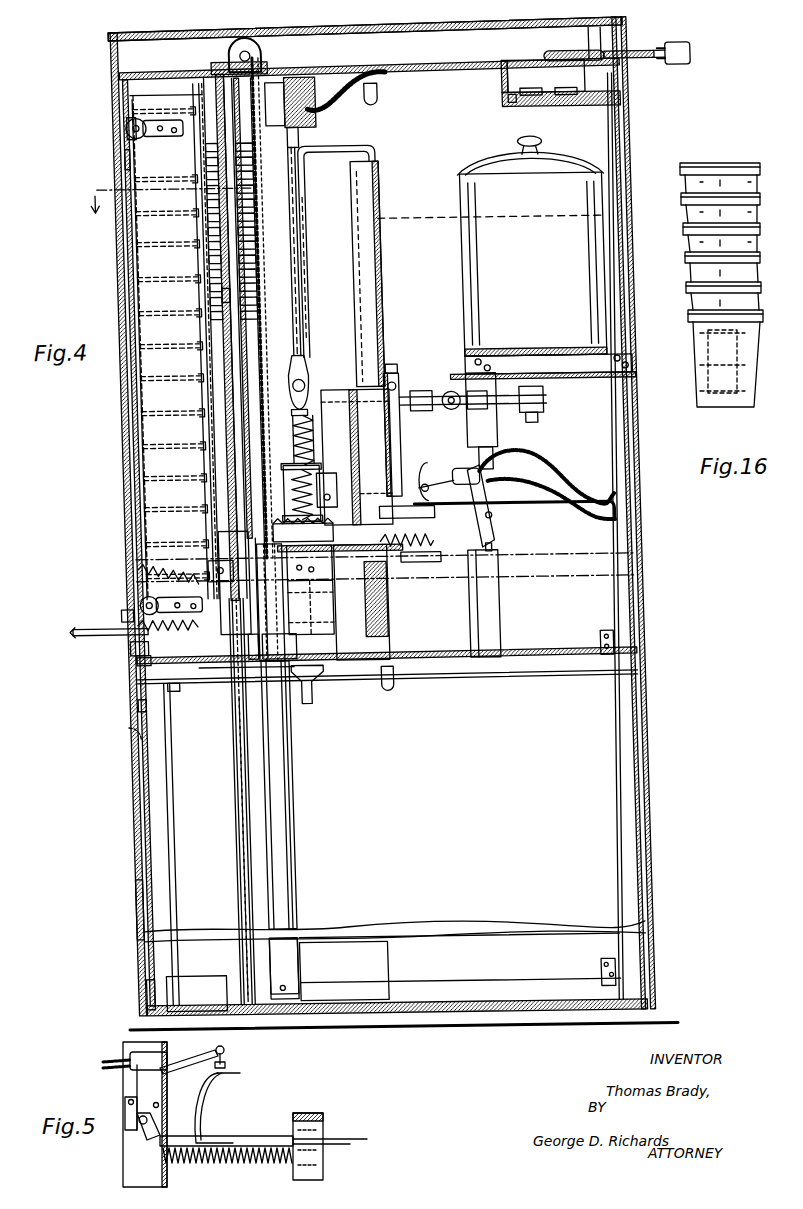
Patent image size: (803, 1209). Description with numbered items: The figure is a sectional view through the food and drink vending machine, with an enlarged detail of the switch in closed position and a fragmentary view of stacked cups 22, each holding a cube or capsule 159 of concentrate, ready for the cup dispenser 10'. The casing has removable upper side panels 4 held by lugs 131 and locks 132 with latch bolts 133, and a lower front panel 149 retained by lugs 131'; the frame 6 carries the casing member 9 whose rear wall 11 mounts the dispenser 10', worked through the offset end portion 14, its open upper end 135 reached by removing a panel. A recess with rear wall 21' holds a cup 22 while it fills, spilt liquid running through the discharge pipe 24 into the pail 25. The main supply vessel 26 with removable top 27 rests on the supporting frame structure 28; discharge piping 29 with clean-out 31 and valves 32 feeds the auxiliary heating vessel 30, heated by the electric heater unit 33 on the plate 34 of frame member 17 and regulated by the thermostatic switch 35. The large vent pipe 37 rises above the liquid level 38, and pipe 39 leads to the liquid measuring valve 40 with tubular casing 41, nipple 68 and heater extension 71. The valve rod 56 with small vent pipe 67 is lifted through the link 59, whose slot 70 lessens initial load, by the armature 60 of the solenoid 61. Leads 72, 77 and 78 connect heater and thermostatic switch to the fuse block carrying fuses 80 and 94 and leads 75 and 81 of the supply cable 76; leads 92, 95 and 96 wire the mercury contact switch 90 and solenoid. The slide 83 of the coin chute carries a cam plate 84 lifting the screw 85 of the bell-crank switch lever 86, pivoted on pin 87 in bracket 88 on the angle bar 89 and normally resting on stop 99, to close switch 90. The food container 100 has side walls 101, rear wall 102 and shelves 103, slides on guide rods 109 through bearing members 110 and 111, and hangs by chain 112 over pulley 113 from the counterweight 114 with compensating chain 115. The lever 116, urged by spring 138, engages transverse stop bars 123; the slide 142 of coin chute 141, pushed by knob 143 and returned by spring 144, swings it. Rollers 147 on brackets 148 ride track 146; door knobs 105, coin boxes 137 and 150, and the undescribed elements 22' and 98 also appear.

In FIG. 4, the removable upper side panel 4 is at (600, 140).
In FIG. 4, the tubular casing 41 is at (389, 523).
In FIG. 4, the frame 6 is at (166, 192).
In FIG. 4, the rectangular casing member 9 is at (259, 347).
In FIG. 4, the cup dispenser 10' is at (267, 368).
In FIG. 4, the rear wall of casing member 11 is at (290, 392).
In FIG. 4, the offset inner end portion 14 is at (511, 67).
In FIG. 4, the frame member 17 is at (372, 646).
In FIG. 4, the rear wall of recess 21' is at (294, 602).
In FIG. 16, the cup 22 is at (703, 285).
In FIG. 4, the box 22' is at (311, 613).
In FIG. 4, the discharge pipe 24 is at (293, 697).
In FIG. 4, the pail 25 is at (360, 955).
In FIG. 4, the main supply vessel 26 is at (456, 202).
In FIG. 4, the removable top 27 is at (489, 172).
In FIG. 4, the supporting frame structure 28 is at (622, 395).
In FIG. 4, the discharge piping 29 is at (512, 417).
In FIG. 4, the auxiliary heating vessel 30 is at (380, 443).
In FIG. 4, the clean-out 31 is at (530, 418).
In FIG. 4, the valve 32 is at (470, 385).
In FIG. 4, the electric heater unit 33 is at (405, 522).
In FIG. 4, the plate 34 is at (416, 545).
In FIG. 4, the adjustable thermostatic switch 35 is at (379, 382).
In FIG. 4, the vent pipe 37 is at (374, 325).
In FIG. 4, the liquid level 38 is at (489, 215).
In FIG. 4, the pipe 39 is at (316, 405).
In FIG. 4, the liquid measuring valve 40 is at (250, 500).
In FIG. 4, the valve rod 56 is at (279, 421).
In FIG. 4, the link 59 is at (301, 268).
In FIG. 4, the armature 60 is at (296, 140).
In FIG. 4, the solenoid 61 is at (305, 82).
In FIG. 4, the vent pipe 67 is at (301, 243).
In FIG. 4, the nipple 68 is at (285, 598).
In FIG. 4, the slot 70 is at (279, 394).
In FIG. 4, the extension 71 is at (318, 532).
In FIG. 4, the lead 72 is at (586, 505).
In FIG. 4, the lead 75 is at (658, 58).
In FIG. 4, the current supply cable 76 is at (568, 58).
In FIG. 4, the lead 77 is at (390, 425).
In FIG. 4, the lead 78 is at (455, 371).
In FIG. 4, the fuse 80 is at (565, 110).
In FIG. 4, the lead 81 is at (630, 67).
In FIG. 4, the slide 83 is at (412, 566).
In FIG. 5, the slide 83 is at (270, 1148).
In FIG. 4, the cam plate 84 is at (418, 468).
In FIG. 5, the cam plate 84 is at (212, 1100).
In FIG. 4, the screw 85 is at (436, 484).
In FIG. 5, the screw 85 is at (228, 1055).
In FIG. 4, the switch lever 86 is at (442, 482).
In FIG. 5, the switch lever 86 is at (163, 1072).
In FIG. 4, the pin 87 is at (482, 525).
In FIG. 5, the bracket 88 is at (125, 1103).
In FIG. 4, the angle bar 89 is at (483, 618).
In FIG. 5, the angle bar 89 is at (123, 1165).
In FIG. 4, the mercury contact switch 90 is at (480, 472).
In FIG. 5, the mercury contact switch 90 is at (128, 1056).
In FIG. 4, the lead 92 is at (520, 490).
In FIG. 4, the fuse 94 is at (506, 110).
In FIG. 4, the lead 95 is at (514, 468).
In FIG. 4, the lead 96 is at (348, 80).
In FIG. 4, the bracket 98 is at (323, 500).
In FIG. 4, the stop 99 is at (484, 545).
In FIG. 5, the stop 99 is at (136, 1126).
In FIG. 4, the food container 100 is at (122, 660).
In FIG. 4, the side wall 101 is at (128, 372).
In FIG. 4, the rear wall 102 is at (222, 300).
In FIG. 4, the shelf 103 is at (130, 440).
In FIG. 4, the knob 105 is at (110, 650).
In FIG. 4, the guide rod 109 is at (205, 838).
In FIG. 4, the bearing member 110 is at (228, 650).
In FIG. 4, the bearing member 111 is at (204, 75).
In FIG. 4, the supporting chain 112 is at (292, 193).
In FIG. 4, the pulley 113 is at (259, 54).
In FIG. 4, the counterweight 114 is at (272, 780).
In FIG. 4, the compensating chain 115 is at (219, 808).
In FIG. 4, the lever 116 is at (210, 640).
In FIG. 4, the transverse stop bar 123 is at (202, 275).
In FIG. 4, the lug 131 is at (421, 678).
In FIG. 4, the lug 131' is at (349, 984).
In FIG. 4, the lock 132 is at (120, 708).
In FIG. 4, the pivotal latch bolt 133 is at (376, 100).
In FIG. 4, the open upper end 135 is at (292, 214).
In FIG. 4, the coin box 137 is at (280, 656).
In FIG. 4, the coil tension spring 138 is at (122, 577).
In FIG. 4, the coin chute 141 is at (108, 618).
In FIG. 4, the slide 142 is at (90, 632).
In FIG. 4, the knob 143 is at (60, 636).
In FIG. 4, the tension spring 144 is at (128, 600).
In FIG. 4, the vertical track 146 is at (122, 162).
In FIG. 4, the roller 147 is at (140, 134).
In FIG. 4, the bracket 148 is at (124, 127).
In FIG. 4, the lower removable panel 149 is at (110, 905).
In FIG. 4, the coin box 150 is at (172, 977).
In FIG. 16, the cube or capsule 159 is at (700, 332).